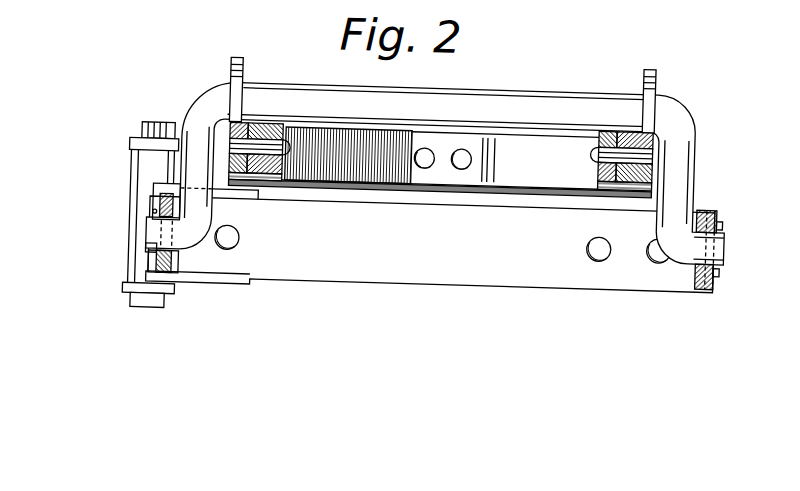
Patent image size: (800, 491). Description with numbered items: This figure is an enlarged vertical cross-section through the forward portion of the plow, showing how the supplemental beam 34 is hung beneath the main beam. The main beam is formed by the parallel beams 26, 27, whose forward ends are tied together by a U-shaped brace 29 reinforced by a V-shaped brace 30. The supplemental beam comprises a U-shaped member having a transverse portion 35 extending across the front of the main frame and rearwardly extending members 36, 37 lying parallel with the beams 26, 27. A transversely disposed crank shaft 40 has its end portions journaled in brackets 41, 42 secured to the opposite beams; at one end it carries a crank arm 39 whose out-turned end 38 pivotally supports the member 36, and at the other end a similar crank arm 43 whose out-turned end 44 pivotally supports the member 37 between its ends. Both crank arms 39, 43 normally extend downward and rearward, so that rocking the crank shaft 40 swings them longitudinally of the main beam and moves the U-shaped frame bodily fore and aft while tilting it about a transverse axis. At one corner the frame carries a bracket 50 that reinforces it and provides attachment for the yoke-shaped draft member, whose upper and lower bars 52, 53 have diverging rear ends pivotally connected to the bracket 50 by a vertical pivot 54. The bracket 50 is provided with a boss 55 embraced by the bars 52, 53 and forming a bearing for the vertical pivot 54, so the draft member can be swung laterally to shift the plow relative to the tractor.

The beam 26 is at (614, 118).
The beam 27 is at (255, 123).
The U-shaped brace 29 is at (303, 183).
The V-shaped brace 30 is at (340, 157).
The supplemental beam 34 is at (126, 214).
The transverse portion 35 is at (421, 277).
The rearwardly extending member 36 is at (715, 272).
The rearwardly extending member 37 is at (165, 262).
The out-turned end 38 is at (718, 215).
The crank arm 39 is at (449, 157).
The crank shaft 40 is at (446, 68).
The bracket 41 is at (652, 56).
The bracket 42 is at (226, 60).
The crank arm 43 is at (196, 140).
The out-turned end 44 is at (150, 246).
The bracket 50 is at (153, 192).
The upper bar 52 is at (127, 143).
The lower bar 53 is at (130, 291).
The vertical pivot 54 is at (152, 122).
The boss 55 is at (131, 214).